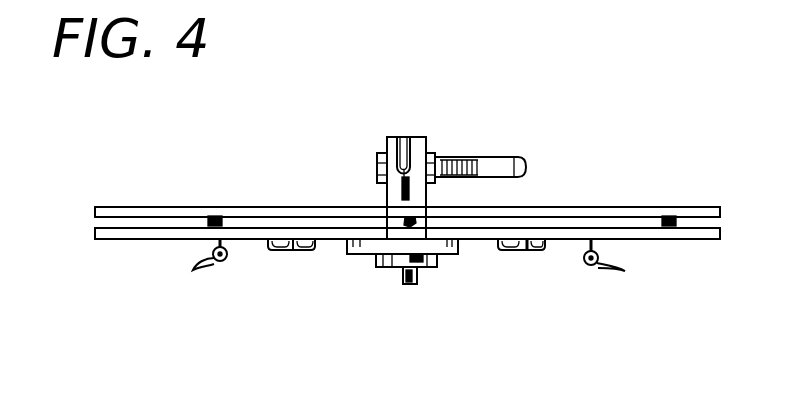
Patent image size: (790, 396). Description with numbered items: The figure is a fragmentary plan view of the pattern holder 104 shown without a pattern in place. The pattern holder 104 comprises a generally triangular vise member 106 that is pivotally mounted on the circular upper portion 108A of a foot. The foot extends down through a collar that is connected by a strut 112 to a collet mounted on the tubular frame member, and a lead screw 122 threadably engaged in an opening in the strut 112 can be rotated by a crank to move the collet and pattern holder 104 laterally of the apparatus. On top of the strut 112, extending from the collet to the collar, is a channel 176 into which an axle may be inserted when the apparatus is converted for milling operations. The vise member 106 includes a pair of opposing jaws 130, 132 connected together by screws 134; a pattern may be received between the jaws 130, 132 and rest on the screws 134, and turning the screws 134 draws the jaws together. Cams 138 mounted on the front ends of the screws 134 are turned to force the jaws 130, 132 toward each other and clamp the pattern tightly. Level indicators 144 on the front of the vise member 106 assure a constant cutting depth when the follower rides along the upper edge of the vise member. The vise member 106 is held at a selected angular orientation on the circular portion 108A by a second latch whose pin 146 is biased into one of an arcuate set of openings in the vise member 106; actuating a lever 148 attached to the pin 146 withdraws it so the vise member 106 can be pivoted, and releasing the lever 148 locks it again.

The pattern holder 104 is at (220, 349).
The vise member 106 is at (143, 255).
The circular upper portion of foot 108A is at (447, 254).
The strut 112 is at (390, 200).
The lead screw 122 is at (503, 160).
The jaw 130 is at (334, 240).
The jaw 132 is at (258, 207).
The screws 134 is at (212, 218).
The cams 138 is at (196, 264).
The level indicators 144 is at (293, 251).
The pin 146 is at (424, 268).
The lever 148 is at (409, 285).
The channel 176 is at (408, 137).